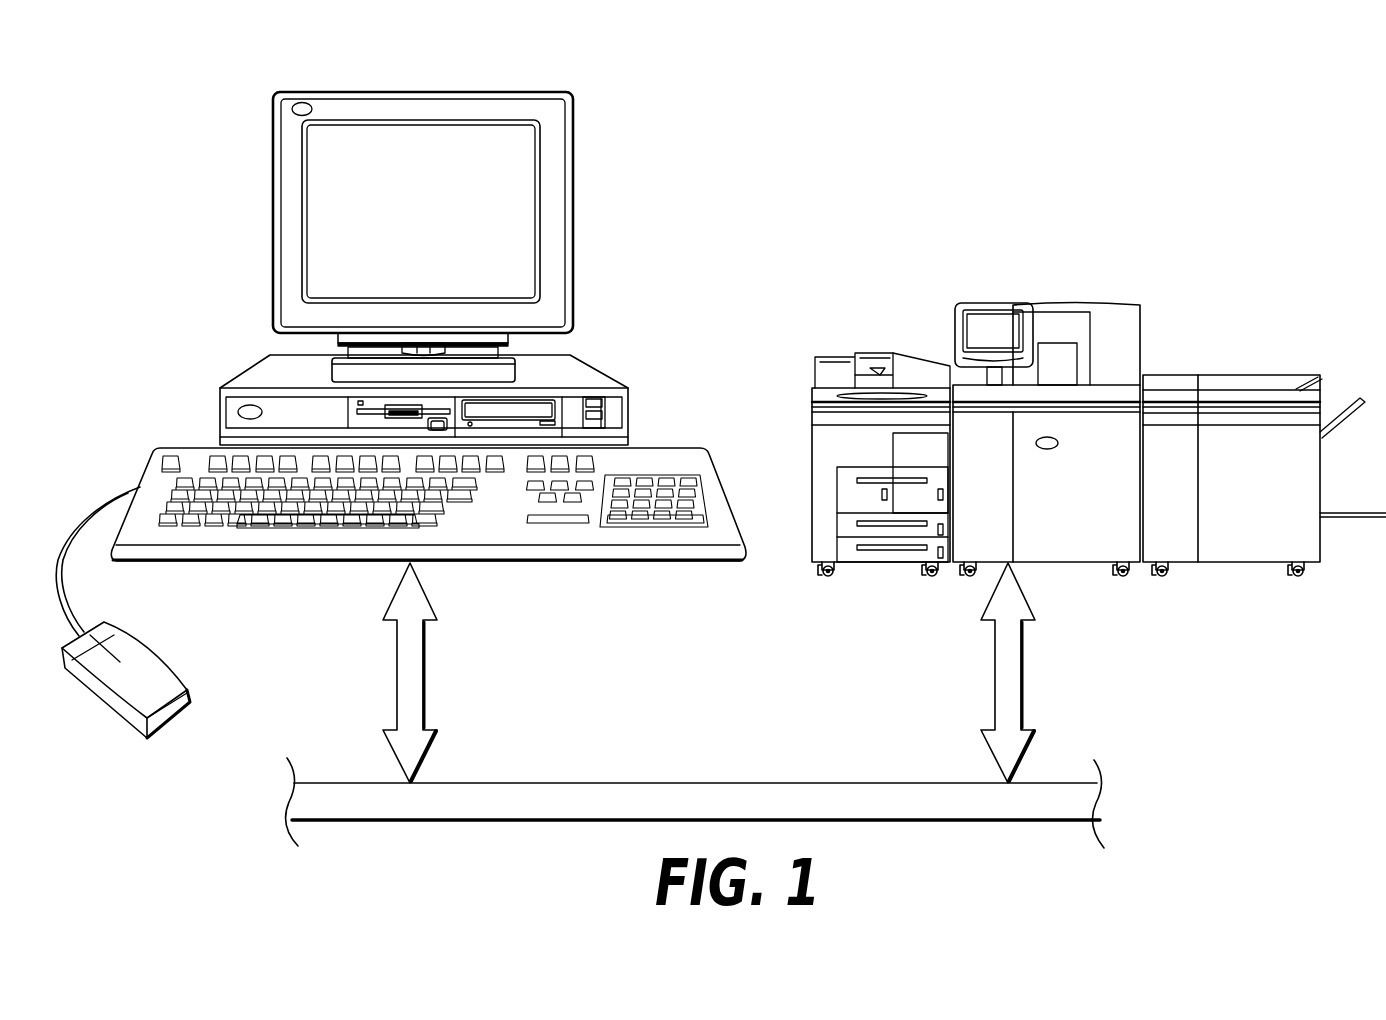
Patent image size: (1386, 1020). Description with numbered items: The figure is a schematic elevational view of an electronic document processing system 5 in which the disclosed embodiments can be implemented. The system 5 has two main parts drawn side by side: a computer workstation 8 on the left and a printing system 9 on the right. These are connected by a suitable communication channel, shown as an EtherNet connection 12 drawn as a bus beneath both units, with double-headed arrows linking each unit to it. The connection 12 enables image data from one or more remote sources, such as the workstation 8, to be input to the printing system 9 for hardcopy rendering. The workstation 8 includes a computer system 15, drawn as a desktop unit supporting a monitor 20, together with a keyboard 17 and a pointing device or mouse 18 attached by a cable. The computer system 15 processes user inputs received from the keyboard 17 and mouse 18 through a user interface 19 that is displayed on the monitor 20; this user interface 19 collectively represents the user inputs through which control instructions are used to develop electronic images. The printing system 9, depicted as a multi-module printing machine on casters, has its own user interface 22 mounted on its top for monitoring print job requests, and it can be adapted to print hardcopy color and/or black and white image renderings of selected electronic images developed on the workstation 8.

The electronic document processing system 5 is at (770, 102).
The computer workstation 8 is at (602, 230).
The printing system 9 is at (1167, 320).
The EtherNet connection 12 is at (703, 783).
The computer system 15 is at (218, 402).
The keyboard 17 is at (711, 474).
The mouse 18 is at (155, 657).
The user interface 19 is at (317, 197).
The monitor 20 is at (475, 91).
The user interface 22 is at (995, 317).